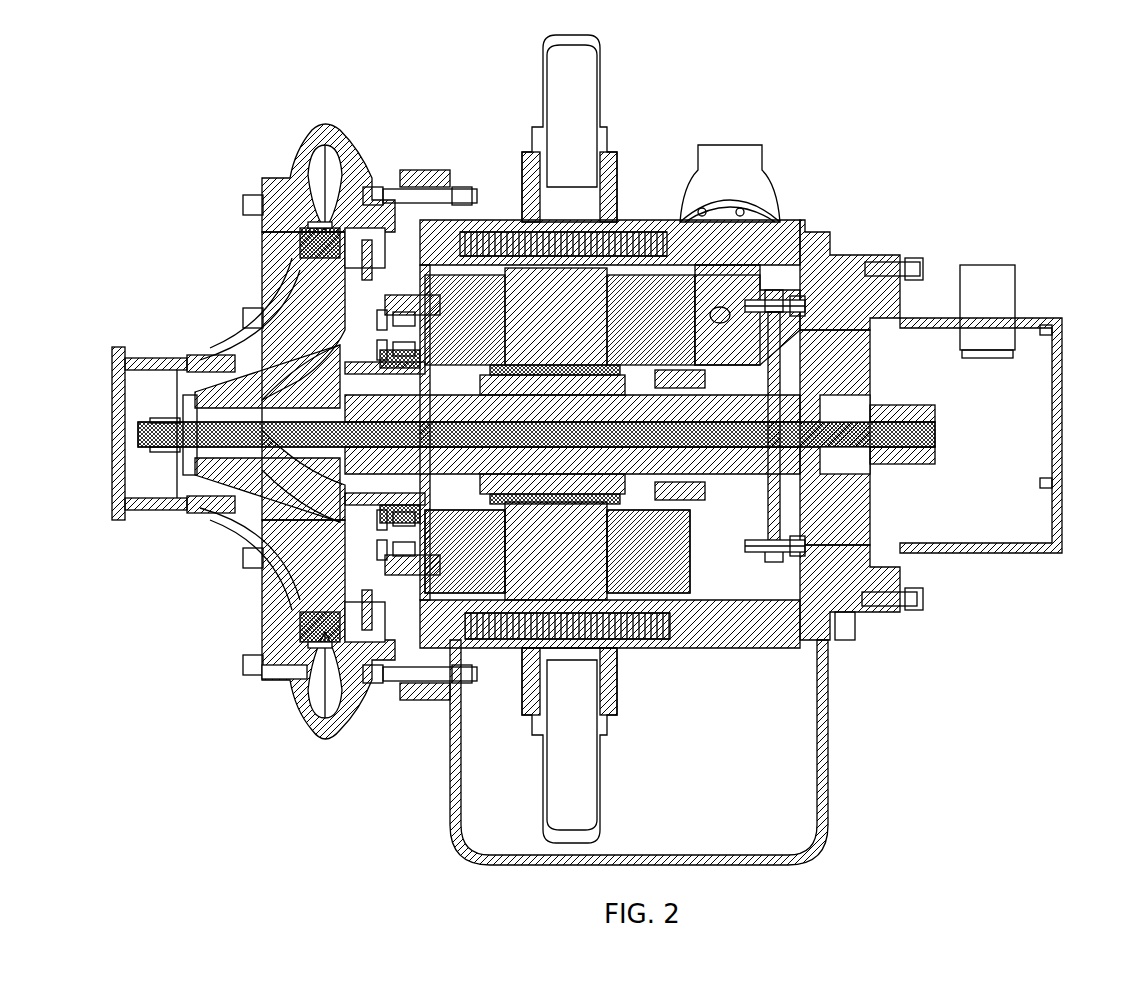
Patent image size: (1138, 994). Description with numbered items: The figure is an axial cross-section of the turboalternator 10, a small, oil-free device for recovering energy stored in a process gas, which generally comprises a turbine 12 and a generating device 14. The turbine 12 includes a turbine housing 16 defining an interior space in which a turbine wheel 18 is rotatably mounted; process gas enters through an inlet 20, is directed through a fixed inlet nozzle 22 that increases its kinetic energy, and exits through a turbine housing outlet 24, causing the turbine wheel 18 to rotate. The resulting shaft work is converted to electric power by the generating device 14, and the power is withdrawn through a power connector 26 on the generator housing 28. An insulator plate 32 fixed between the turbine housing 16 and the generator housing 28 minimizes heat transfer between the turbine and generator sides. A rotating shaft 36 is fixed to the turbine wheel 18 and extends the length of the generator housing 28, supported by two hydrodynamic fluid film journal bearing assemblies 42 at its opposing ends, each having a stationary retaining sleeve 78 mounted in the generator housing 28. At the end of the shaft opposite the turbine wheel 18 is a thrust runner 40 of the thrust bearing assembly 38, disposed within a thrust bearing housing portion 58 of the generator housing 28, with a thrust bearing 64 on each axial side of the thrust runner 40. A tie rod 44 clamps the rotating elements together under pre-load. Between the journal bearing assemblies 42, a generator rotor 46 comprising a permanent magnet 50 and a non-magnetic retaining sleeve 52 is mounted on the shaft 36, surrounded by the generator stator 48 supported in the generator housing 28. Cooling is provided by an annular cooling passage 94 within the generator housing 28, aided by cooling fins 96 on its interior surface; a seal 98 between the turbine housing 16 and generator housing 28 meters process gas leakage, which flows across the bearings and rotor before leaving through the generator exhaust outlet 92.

The turboalternator 10 is at (550, 880).
The turbine 12 is at (165, 540).
The generating device 14 is at (855, 790).
The turbine housing 16 is at (288, 140).
The turbine wheel 18 is at (248, 482).
The inlet 20 is at (320, 158).
The fixed inlet nozzle 22 is at (300, 255).
The turbine housing outlet 24 is at (128, 492).
The power connector 26 is at (724, 150).
The generator housing 28 is at (810, 250).
The insulator plate 32 is at (398, 178).
The rotating shaft 36 is at (465, 495).
The thrust bearing assembly 38 is at (778, 290).
The thrust runner 40 is at (785, 340).
The hydrodynamic fluid film journal bearing assemblies 42 is at (445, 515).
The tie rod 44 is at (925, 448).
The generator rotor 46 is at (543, 508).
The generator stator 48 is at (580, 555).
The permanent magnet 50 is at (578, 490).
The non-magnetic retaining sleeve 52 is at (545, 375).
The thrust bearing housing portion 58 is at (795, 350).
The thrust bearing 64 is at (782, 503).
The retaining sleeve 78 is at (378, 518).
The generator exhaust outlet 92 is at (1082, 395).
The annular cooling passage 94 is at (380, 372).
The cooling fins 96 is at (636, 232).
The seal 98 is at (356, 312).